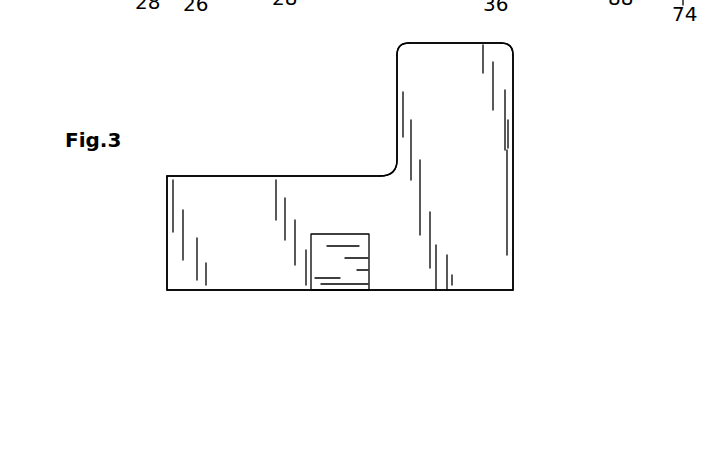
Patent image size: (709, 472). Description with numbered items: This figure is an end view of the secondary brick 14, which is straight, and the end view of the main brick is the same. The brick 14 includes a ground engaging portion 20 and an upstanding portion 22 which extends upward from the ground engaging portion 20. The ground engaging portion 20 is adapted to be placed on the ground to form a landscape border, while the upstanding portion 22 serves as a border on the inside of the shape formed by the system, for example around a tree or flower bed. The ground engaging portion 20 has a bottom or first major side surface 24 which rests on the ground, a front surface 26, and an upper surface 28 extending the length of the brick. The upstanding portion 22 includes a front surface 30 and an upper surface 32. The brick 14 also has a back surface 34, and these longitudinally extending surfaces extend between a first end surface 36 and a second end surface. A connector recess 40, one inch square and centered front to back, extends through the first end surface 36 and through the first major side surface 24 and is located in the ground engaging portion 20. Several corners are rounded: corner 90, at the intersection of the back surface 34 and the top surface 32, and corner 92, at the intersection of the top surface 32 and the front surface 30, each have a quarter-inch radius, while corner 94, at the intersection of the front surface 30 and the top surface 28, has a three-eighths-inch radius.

The secondary brick 14 is at (290, 118).
The ground engaging portion 20 is at (558, 246).
The upstanding portion 22 is at (540, 131).
The first major side surface 24 is at (260, 290).
The front surface 26 is at (167, 250).
The upper surface 28 is at (250, 176).
The front surface 30 is at (397, 100).
The upper surface 32 is at (450, 43).
The back surface 34 is at (513, 200).
The first end surface 36 is at (458, 260).
The connector recess 40 is at (339, 271).
The corner 90 is at (511, 45).
The corner 92 is at (398, 44).
The corner 94 is at (388, 168).